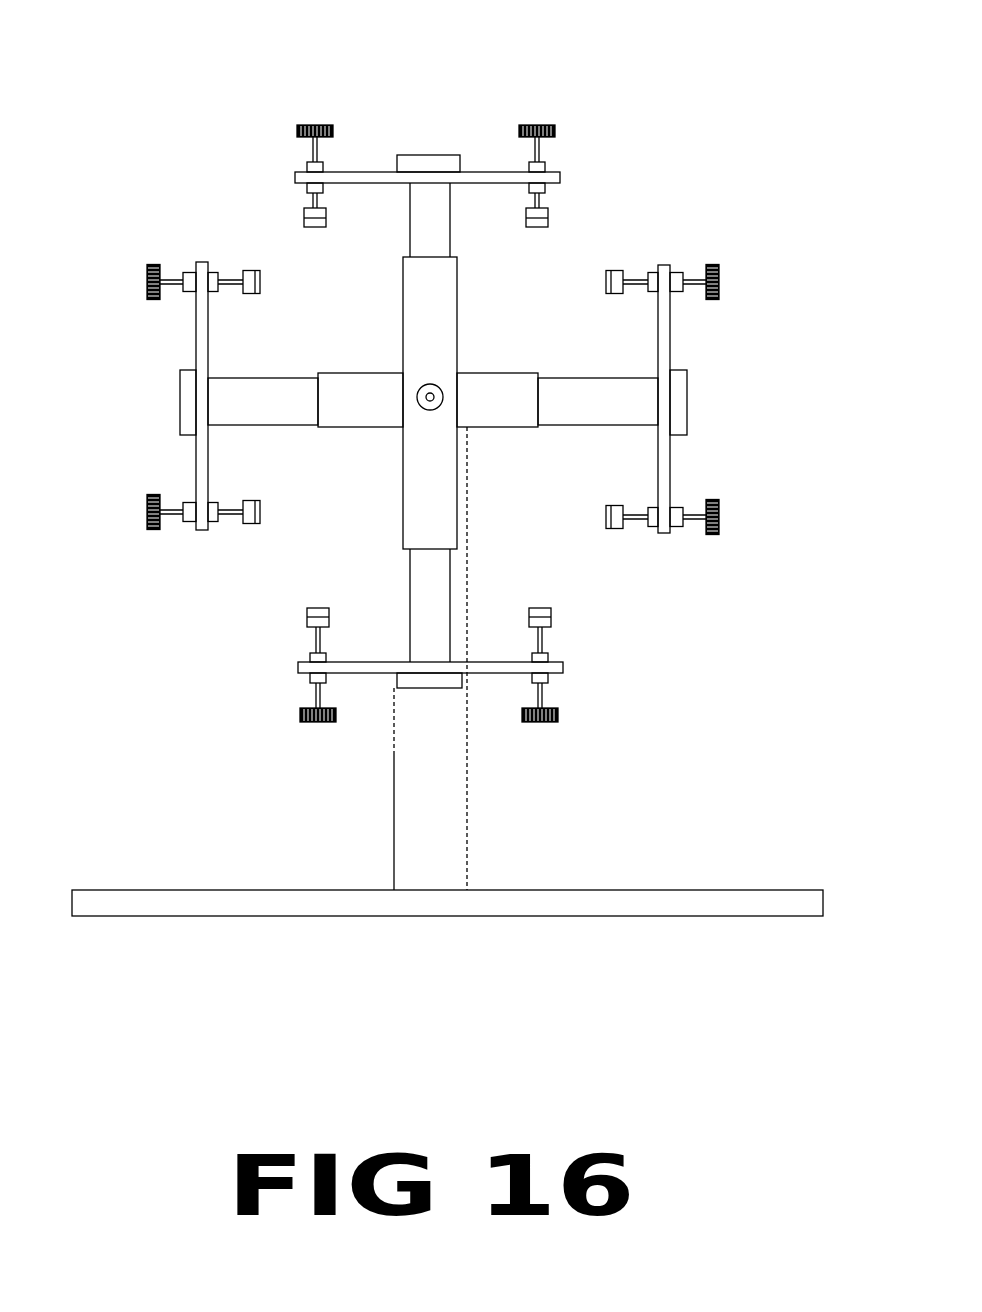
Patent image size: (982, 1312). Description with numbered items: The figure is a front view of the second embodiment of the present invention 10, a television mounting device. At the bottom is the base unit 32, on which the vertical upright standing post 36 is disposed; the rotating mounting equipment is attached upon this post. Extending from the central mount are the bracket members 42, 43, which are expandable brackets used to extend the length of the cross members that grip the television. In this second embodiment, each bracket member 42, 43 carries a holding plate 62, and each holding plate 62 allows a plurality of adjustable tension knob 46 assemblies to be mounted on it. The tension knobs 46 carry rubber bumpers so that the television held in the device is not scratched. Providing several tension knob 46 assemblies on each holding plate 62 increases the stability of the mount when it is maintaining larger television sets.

The present invention 10 is at (712, 238).
The base unit 32 is at (455, 915).
The vertical upright standing post 36 is at (467, 813).
The bracket member 42 is at (217, 378).
The bracket member 43 is at (557, 400).
The adjustable tension knob 46 is at (533, 127).
The holding plate 62 is at (202, 263).